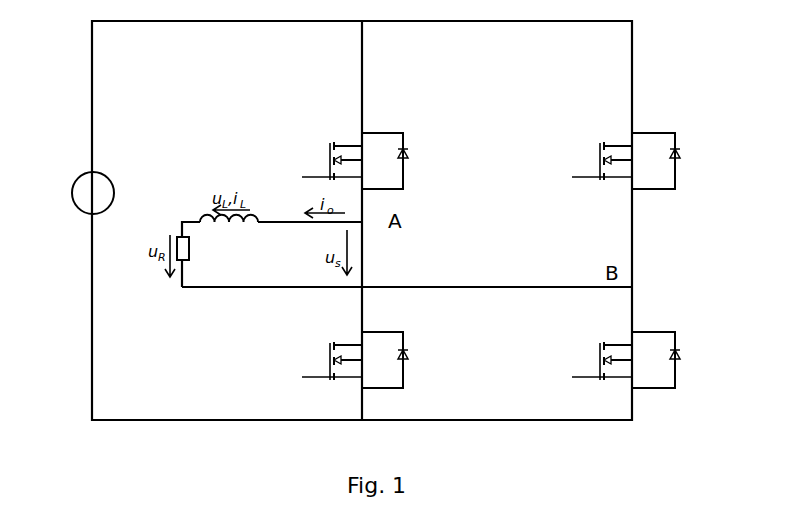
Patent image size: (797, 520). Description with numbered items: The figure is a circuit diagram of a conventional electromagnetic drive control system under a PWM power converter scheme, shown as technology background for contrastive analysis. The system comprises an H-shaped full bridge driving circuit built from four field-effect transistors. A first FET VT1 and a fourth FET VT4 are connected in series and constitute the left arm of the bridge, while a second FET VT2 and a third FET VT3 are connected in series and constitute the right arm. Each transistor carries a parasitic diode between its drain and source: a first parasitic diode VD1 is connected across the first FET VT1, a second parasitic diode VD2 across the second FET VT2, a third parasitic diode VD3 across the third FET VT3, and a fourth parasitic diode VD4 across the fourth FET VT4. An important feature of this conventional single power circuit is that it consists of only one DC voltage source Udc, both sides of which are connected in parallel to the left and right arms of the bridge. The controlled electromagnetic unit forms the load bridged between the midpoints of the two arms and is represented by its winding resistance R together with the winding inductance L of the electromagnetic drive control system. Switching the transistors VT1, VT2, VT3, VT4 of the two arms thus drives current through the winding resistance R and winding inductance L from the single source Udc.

The DC voltage source Udc is at (71, 195).
The first FET VT1 is at (310, 161).
The second FET VT2 is at (583, 161).
The third FET VT3 is at (583, 361).
The fourth FET VT4 is at (308, 365).
The first parasitic diode VD1 is at (412, 161).
The second parasitic diode VD2 is at (683, 161).
The third parasitic diode VD3 is at (687, 360).
The fourth parasitic diode VD4 is at (414, 360).
The winding resistance R is at (198, 254).
The winding inductance L is at (229, 231).